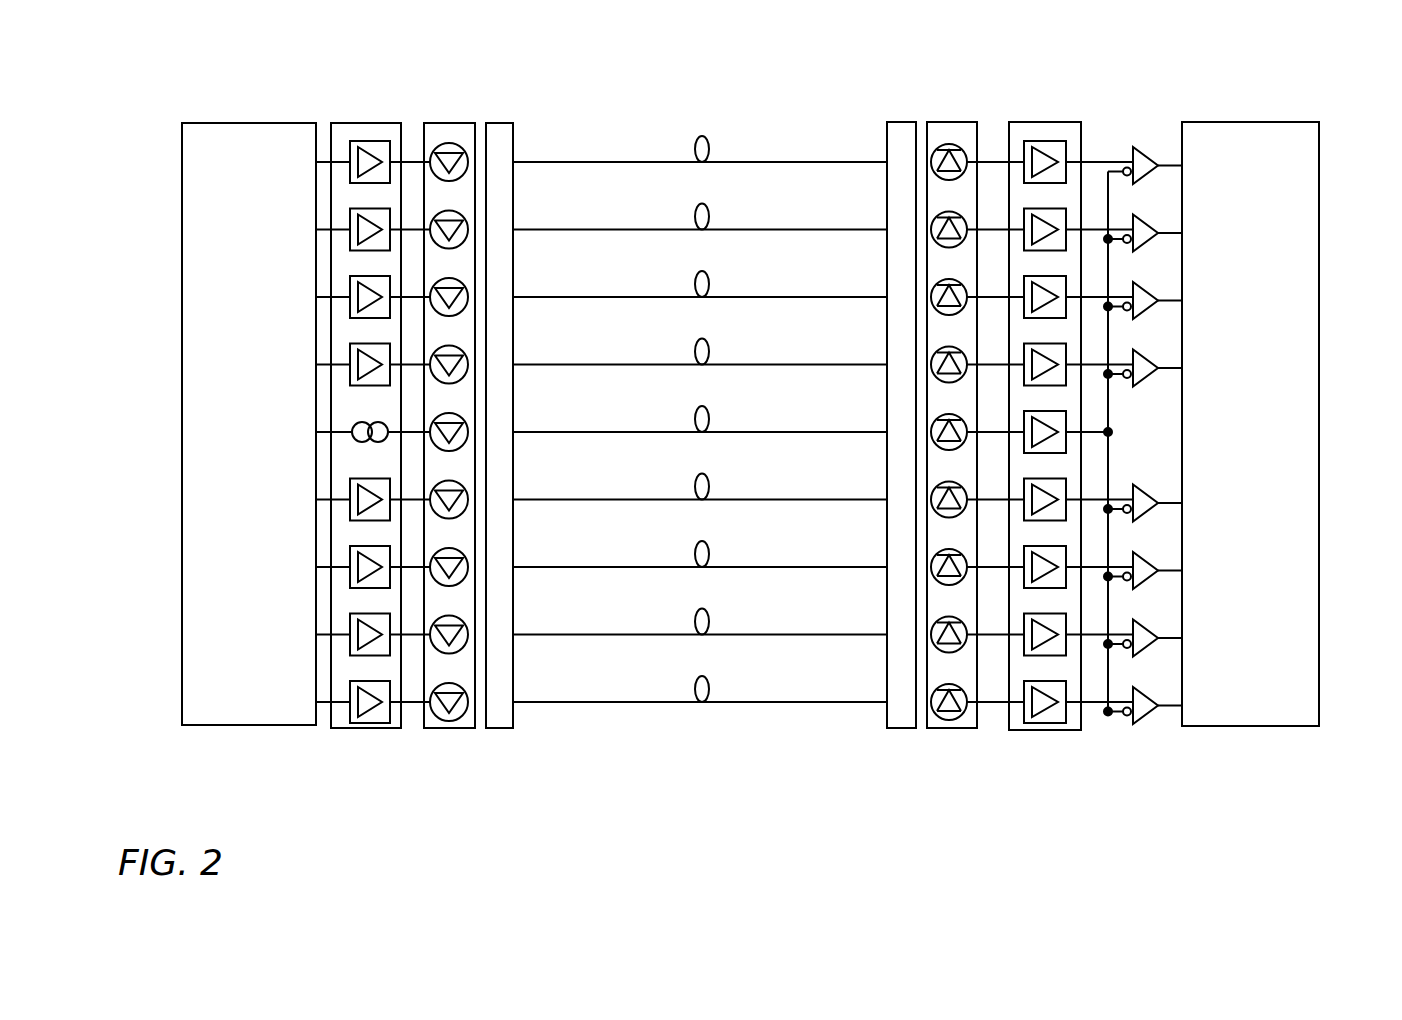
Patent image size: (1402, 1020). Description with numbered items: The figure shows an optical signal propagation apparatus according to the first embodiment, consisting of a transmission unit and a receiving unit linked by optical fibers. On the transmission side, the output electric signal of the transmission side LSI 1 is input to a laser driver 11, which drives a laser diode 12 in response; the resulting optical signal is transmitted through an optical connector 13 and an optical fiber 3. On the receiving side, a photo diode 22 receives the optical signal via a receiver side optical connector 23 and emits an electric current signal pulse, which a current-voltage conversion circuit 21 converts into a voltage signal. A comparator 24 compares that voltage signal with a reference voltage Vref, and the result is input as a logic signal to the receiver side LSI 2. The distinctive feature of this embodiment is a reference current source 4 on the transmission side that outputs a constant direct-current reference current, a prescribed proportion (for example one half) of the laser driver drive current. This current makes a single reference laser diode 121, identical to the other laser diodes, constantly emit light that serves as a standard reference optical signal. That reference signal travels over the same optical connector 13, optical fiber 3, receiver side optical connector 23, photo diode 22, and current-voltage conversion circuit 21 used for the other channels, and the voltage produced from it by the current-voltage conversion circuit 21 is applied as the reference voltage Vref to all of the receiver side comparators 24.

The transmission side LSI 1 is at (252, 95).
The receiver side LSI 2 is at (1243, 75).
The optical fiber 3 is at (627, 125).
The reference current source 4 is at (354, 443).
The laser driver 11 is at (362, 728).
The laser diode 12 is at (452, 728).
The optical connector 13 is at (515, 75).
The current-voltage conversion circuit 21 is at (1033, 730).
The photo diode 22 is at (955, 728).
The optical connector 23 is at (920, 78).
The comparator 24 is at (1140, 727).
The reference laser diode 121 is at (470, 433).
The reference voltage Vref is at (1108, 714).